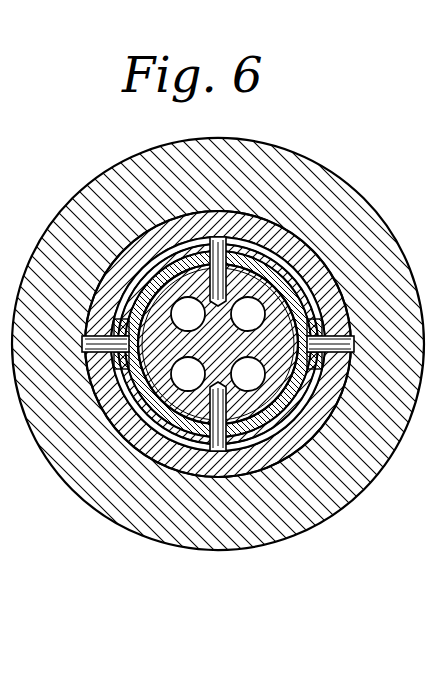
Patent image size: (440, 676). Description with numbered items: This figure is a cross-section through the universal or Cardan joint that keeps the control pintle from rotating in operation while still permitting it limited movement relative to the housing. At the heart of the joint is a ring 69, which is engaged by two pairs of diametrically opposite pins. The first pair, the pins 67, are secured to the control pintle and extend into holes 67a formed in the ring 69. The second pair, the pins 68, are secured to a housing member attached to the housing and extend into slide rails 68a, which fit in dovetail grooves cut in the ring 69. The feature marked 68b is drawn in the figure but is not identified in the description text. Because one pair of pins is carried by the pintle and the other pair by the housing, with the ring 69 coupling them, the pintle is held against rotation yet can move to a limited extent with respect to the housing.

The pins 67 is at (196, 437).
The holes 67a is at (236, 443).
The pins 68 is at (351, 306).
The slide rails 68a is at (318, 376).
The inner sleeve 68b is at (118, 382).
The ring 69 is at (302, 412).